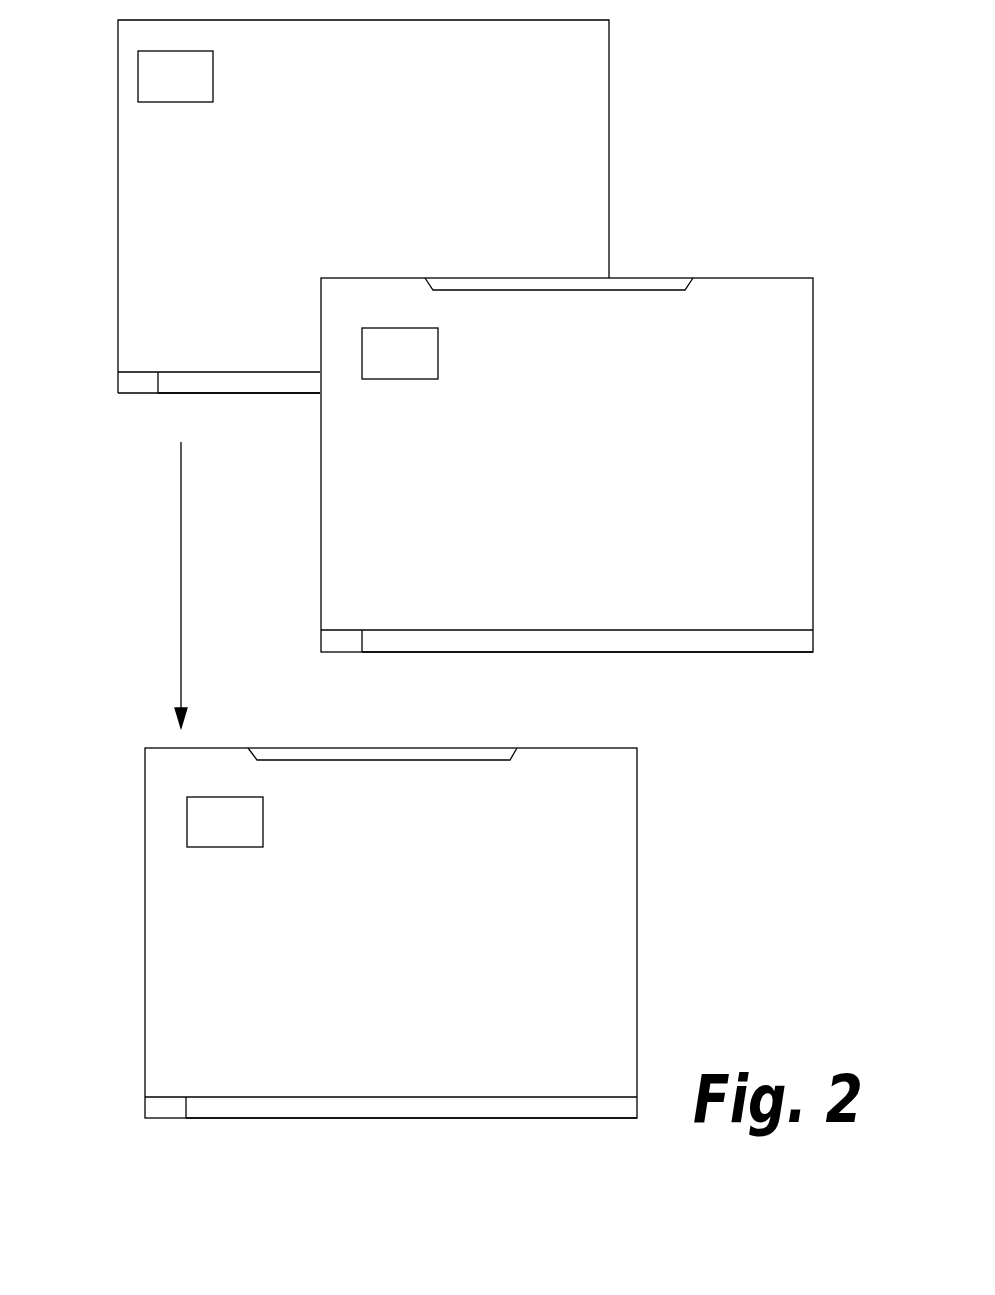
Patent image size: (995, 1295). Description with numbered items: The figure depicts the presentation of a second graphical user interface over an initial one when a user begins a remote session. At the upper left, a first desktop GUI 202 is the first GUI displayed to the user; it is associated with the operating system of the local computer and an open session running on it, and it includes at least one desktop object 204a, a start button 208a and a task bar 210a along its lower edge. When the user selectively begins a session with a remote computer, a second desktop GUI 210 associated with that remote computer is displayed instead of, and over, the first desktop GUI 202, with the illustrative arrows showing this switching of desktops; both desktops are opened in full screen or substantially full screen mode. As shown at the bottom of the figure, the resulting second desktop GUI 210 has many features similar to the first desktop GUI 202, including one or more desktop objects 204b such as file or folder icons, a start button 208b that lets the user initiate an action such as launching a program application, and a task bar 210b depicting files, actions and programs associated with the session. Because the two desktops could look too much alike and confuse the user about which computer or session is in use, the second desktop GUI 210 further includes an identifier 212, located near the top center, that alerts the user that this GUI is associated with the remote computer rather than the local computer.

The first desktop GUI 202 is at (454, 263).
The desktop object 204a is at (200, 87).
The desktop object 204b is at (424, 365).
The start button 208a is at (133, 382).
The start button 208b is at (337, 640).
The second desktop GUI 210 is at (479, 698).
The task bar 210a is at (262, 382).
The task bar 210b is at (463, 640).
The identifier 212 is at (646, 282).